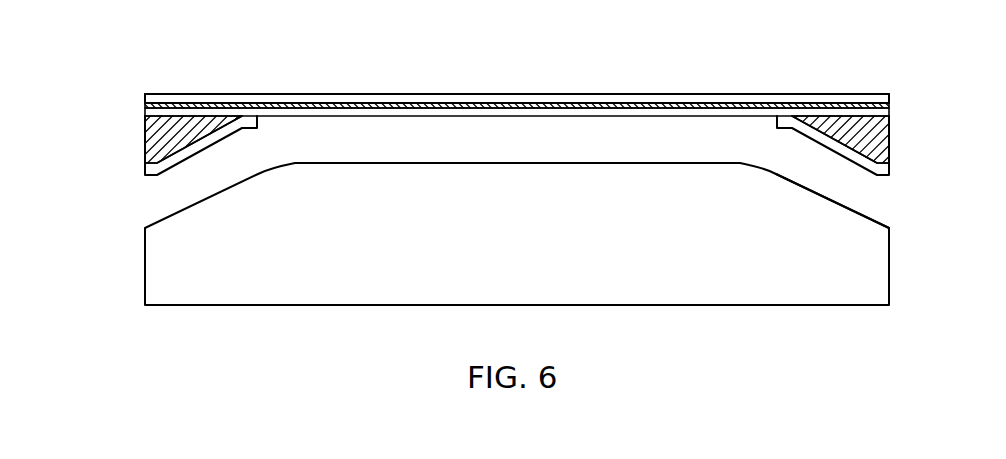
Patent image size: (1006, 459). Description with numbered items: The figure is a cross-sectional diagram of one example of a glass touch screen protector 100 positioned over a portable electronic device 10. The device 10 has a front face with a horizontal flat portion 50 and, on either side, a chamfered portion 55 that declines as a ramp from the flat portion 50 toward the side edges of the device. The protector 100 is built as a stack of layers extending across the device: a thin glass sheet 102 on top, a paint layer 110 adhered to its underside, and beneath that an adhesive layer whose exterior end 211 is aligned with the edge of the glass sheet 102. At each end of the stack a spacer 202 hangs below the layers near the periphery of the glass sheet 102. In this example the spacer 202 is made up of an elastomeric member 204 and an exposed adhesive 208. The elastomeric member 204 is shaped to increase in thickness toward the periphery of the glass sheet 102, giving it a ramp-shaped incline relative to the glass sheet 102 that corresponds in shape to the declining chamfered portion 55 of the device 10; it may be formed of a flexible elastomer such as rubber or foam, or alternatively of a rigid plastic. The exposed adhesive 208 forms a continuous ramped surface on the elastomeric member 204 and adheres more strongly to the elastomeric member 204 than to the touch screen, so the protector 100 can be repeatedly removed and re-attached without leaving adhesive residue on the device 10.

The portable electronic device 10 is at (141, 279).
The flat portion 50 is at (537, 160).
The chamfered portion 55 is at (864, 211).
The glass touch screen protector 100 is at (113, 74).
The glass sheet 102 is at (890, 97).
The paint layer 110 is at (890, 105).
The spacer 202 is at (128, 127).
The elastomeric member 204 is at (157, 152).
The exposed adhesive 208 is at (200, 147).
The exterior end 211 is at (890, 112).